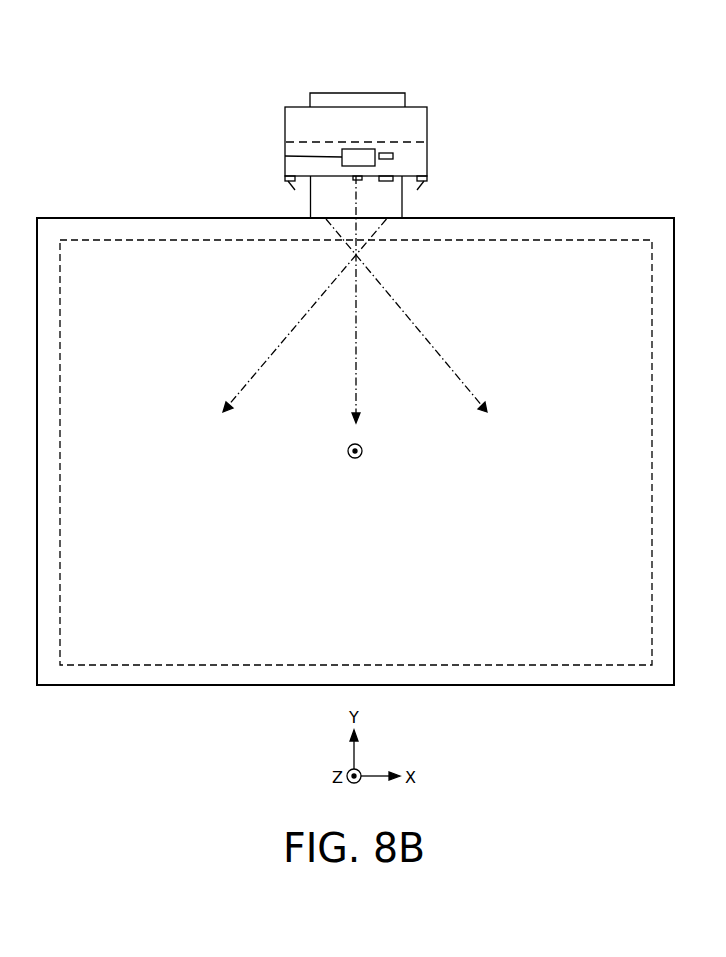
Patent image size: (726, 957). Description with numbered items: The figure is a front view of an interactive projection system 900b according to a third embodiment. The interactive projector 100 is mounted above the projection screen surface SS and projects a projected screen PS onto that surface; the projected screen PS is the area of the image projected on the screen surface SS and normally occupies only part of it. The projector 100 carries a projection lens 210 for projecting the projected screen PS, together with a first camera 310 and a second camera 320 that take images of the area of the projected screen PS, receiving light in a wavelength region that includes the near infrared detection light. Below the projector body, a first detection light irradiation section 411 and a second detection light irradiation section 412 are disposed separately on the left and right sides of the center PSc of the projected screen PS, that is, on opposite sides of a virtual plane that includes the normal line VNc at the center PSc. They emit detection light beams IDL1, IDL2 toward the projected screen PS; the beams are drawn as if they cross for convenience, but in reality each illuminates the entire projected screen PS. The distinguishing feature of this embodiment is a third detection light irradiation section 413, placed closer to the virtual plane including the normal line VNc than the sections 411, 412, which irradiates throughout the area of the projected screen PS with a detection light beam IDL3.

The interactive projector 100 is at (427, 123).
The projection lens 210 is at (285, 156).
The first camera 310 is at (393, 156).
The second camera 320 is at (394, 182).
The first detection light irradiation section 411 is at (284, 177).
The second detection light irradiation section 412 is at (428, 177).
The third detection light irradiation section 413 is at (353, 178).
The interactive projection system 900b is at (633, 123).
The projection screen surface SS is at (95, 226).
The projected screen PS is at (173, 239).
The center of the projected screen PSc is at (362, 451).
The normal line VNc is at (342, 462).
The detection light beam IDL1 is at (429, 330).
The detection light beam IDL2 is at (287, 330).
The detection light beam IDL3 is at (377, 301).